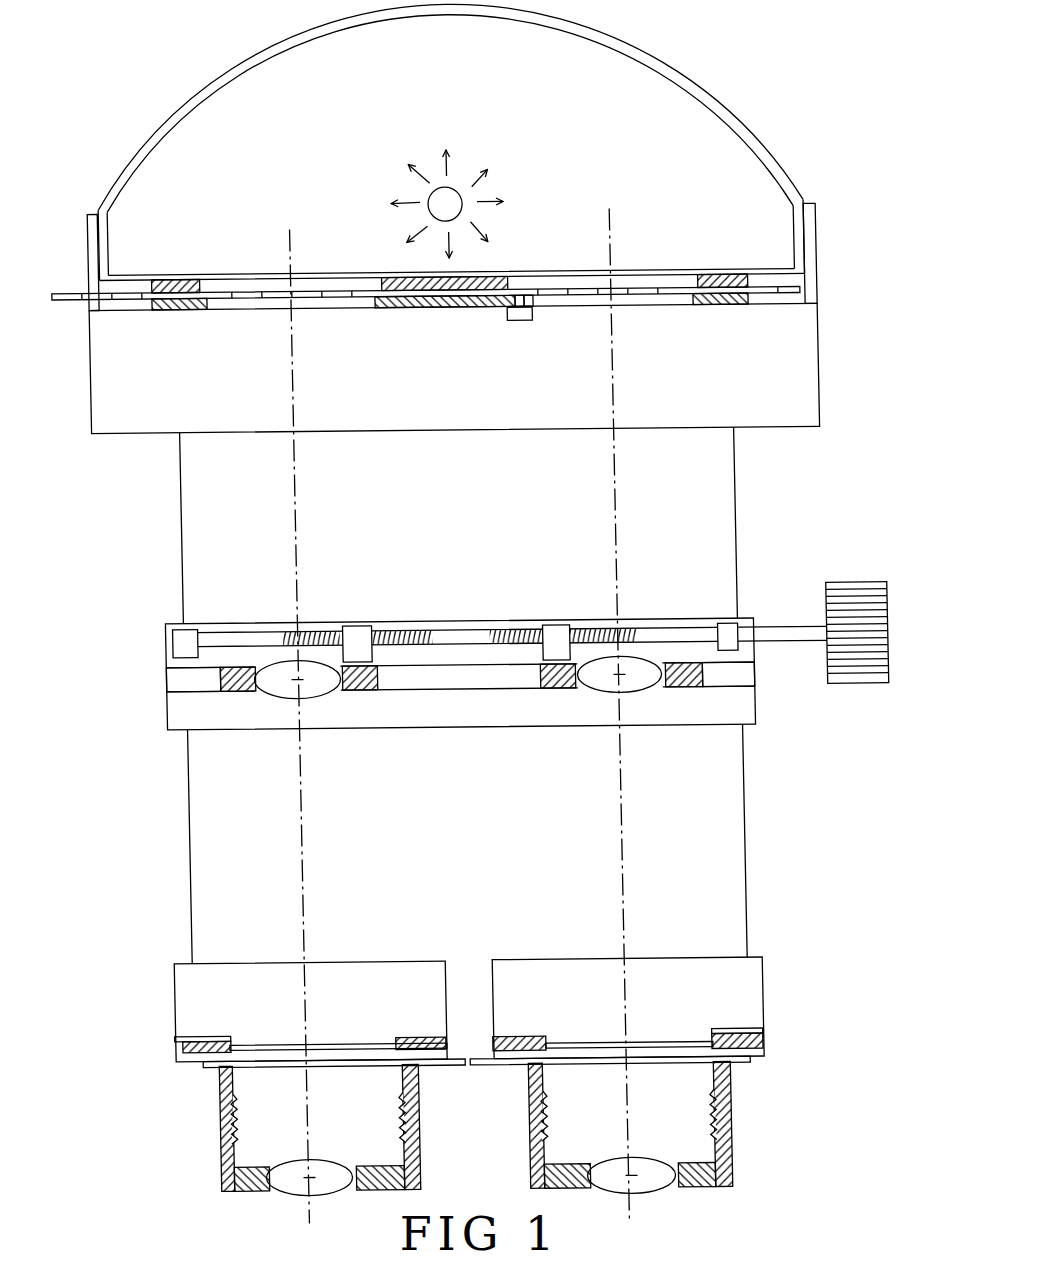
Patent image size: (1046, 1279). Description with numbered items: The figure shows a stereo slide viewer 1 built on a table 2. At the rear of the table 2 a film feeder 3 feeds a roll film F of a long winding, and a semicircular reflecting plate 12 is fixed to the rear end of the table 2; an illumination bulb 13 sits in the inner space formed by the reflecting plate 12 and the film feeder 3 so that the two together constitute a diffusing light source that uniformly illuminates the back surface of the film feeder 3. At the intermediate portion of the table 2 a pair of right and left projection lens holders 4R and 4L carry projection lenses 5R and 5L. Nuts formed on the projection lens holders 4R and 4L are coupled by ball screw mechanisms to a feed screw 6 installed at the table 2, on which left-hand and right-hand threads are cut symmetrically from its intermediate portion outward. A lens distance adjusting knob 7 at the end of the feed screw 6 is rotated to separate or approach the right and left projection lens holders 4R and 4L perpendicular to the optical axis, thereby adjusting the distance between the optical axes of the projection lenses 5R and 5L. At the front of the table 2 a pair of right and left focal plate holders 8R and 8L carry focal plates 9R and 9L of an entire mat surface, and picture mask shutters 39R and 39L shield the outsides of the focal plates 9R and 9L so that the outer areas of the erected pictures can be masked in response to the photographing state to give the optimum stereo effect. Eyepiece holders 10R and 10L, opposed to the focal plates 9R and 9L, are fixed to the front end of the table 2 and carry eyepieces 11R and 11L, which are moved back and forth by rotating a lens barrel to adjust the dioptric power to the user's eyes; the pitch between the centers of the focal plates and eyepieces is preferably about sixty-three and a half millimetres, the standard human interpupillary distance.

The stereo slide viewer 1 is at (130, 153).
The table 2 is at (177, 510).
The film feeder 3 is at (165, 311).
The left projection lens holder 4L is at (222, 690).
The right projection lens holder 4R is at (695, 673).
The left projection lens 5L is at (270, 690).
The right projection lens 5R is at (634, 691).
The feed screw 6 is at (778, 630).
The lens distance adjusting knob 7 is at (848, 586).
The left focal plate holder 8L is at (170, 976).
The right focal plate holder 8R is at (693, 977).
The left focal plate 9L is at (238, 1041).
The right focal plate 9R is at (658, 1040).
The left picture mask shutter 39L is at (182, 1032).
The right picture mask shutter 39R is at (719, 1031).
The left eyepiece holder 10L is at (204, 1081).
The right eyepiece holder 10R is at (719, 1085).
The left eyepiece 11L is at (280, 1192).
The right eyepiece 11R is at (639, 1195).
The semicircular reflecting plate 12 is at (716, 101).
The illumination bulb 13 is at (489, 186).
The roll film F is at (64, 289).